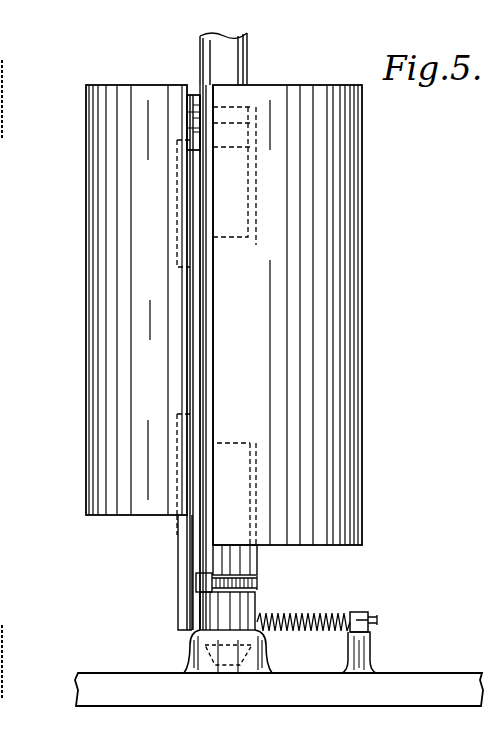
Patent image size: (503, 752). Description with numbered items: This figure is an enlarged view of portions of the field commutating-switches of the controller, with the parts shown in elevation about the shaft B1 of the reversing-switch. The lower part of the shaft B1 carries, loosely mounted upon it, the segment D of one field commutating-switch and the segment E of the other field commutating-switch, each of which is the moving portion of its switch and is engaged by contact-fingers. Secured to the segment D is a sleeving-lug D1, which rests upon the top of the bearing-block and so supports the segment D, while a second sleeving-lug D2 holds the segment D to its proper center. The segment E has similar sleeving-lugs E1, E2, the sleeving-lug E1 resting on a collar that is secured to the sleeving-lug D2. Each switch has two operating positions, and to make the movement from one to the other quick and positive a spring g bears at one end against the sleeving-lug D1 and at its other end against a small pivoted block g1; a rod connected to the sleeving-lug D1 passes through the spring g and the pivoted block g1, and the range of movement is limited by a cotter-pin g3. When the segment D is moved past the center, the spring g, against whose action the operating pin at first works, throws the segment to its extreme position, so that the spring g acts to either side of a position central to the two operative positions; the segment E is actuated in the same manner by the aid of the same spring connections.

The segment of the field commutating-switch D is at (86, 292).
The sleeving-lug D1 is at (180, 583).
The second sleeving-lug D2 is at (192, 195).
The segment of the other field commutating-switch E is at (362, 295).
The sleeving-lug E1 is at (195, 90).
The sleeving-lug E2 is at (258, 567).
The shaft of the reversing-switch B1 is at (249, 70).
The spring g is at (303, 606).
The pivoted block g1 is at (356, 612).
The cotter-pin g3 is at (376, 618).